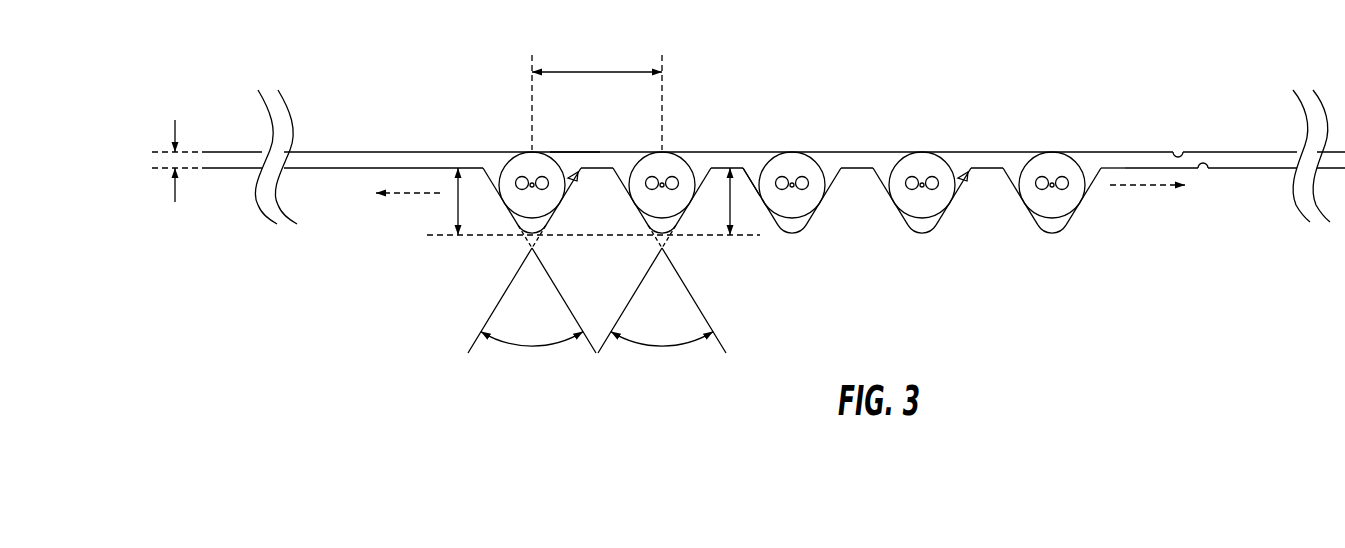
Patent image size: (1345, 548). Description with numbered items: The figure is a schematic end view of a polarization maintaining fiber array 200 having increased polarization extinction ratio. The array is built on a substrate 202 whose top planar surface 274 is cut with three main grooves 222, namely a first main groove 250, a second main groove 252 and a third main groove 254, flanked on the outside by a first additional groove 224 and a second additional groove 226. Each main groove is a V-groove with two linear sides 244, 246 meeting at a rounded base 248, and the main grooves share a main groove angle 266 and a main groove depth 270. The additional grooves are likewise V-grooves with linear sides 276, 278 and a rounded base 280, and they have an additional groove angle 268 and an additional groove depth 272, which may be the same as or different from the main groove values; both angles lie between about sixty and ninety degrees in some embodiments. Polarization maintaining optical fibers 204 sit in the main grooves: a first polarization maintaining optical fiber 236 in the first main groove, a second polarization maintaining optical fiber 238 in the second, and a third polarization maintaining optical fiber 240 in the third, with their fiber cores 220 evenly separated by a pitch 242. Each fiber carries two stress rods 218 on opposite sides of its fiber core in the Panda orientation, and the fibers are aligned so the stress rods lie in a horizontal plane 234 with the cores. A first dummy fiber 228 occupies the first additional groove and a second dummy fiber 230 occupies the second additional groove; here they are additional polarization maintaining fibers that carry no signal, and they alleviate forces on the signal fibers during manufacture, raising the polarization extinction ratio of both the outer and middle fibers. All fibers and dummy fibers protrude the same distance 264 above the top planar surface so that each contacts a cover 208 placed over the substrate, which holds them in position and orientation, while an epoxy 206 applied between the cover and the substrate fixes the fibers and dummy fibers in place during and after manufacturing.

The polarization maintaining fiber array 200 is at (286, 50).
The substrate 202 is at (1206, 165).
The polarization maintaining optical fibers 204 is at (693, 168).
The epoxy 206 is at (1133, 152).
The cover 208 is at (1180, 152).
The stress rods 218 is at (935, 177).
The fiber core 220 is at (522, 181).
The main grooves 222 is at (650, 226).
The first additional groove 224 is at (553, 223).
The second additional groove 226 is at (1090, 220).
The first dummy fiber 228 is at (565, 152).
The second dummy fiber 230 is at (1060, 152).
The horizontal plane 234 is at (405, 200).
The first polarization maintaining optical fiber 236 is at (668, 152).
The second polarization maintaining optical fiber 238 is at (790, 153).
The third polarization maintaining optical fiber 240 is at (904, 172).
The pitch 242 is at (590, 72).
The linear side 244 is at (498, 170).
The linear side 246 is at (573, 176).
The rounded base 248 is at (530, 233).
The first main groove 250 is at (700, 176).
The second main groove 252 is at (756, 168).
The third main groove 254 is at (962, 175).
The distance 264 is at (172, 193).
The main groove angle 266 is at (663, 353).
The additional groove angle 268 is at (533, 353).
The main groove depth 270 is at (735, 230).
The additional groove depth 272 is at (456, 205).
The top planar surface 274 is at (333, 168).
The linear side 276 is at (1016, 168).
The linear side 278 is at (1094, 168).
The rounded base 280 is at (1052, 234).